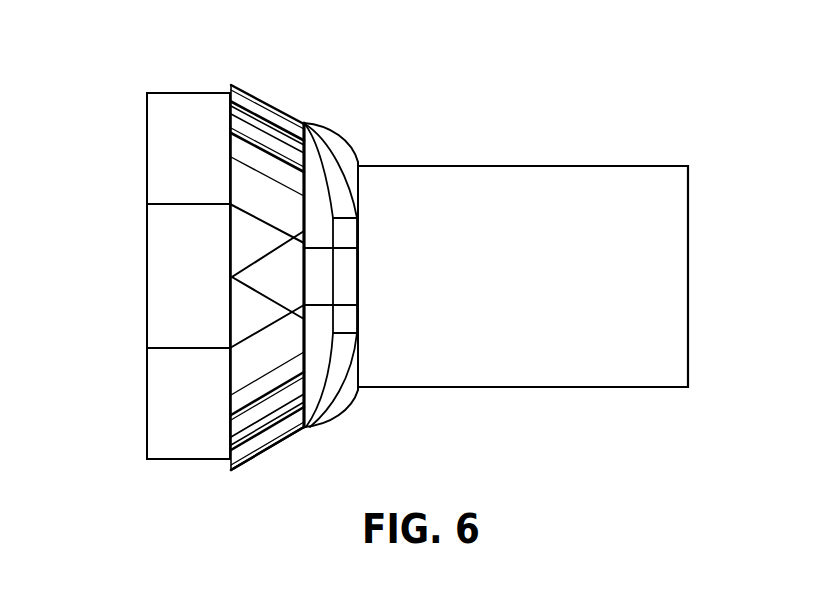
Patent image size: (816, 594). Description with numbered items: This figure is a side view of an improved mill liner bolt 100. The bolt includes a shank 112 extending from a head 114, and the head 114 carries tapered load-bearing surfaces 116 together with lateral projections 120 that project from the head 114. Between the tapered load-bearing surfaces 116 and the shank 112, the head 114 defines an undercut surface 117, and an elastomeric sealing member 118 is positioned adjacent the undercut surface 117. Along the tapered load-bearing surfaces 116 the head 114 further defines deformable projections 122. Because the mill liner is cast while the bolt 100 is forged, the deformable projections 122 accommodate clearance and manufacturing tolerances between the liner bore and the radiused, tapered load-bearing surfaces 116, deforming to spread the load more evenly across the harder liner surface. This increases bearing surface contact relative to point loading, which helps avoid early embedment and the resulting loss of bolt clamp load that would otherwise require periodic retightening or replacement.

The mill liner bolt 100 is at (612, 58).
The shank 112 is at (515, 165).
The head 114 is at (180, 92).
The tapered load-bearing surfaces 116 is at (243, 87).
The undercut surface 117 is at (302, 122).
The elastomeric sealing member 118 is at (347, 140).
The lateral projections 120 is at (260, 278).
The deformable projections 122 is at (278, 447).